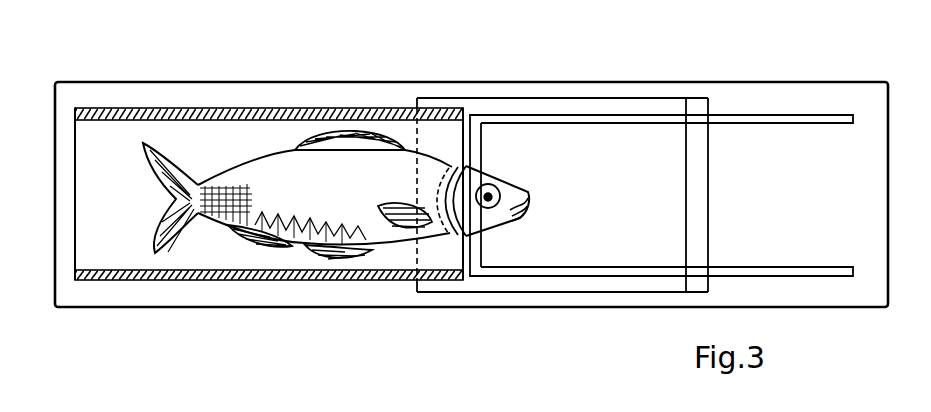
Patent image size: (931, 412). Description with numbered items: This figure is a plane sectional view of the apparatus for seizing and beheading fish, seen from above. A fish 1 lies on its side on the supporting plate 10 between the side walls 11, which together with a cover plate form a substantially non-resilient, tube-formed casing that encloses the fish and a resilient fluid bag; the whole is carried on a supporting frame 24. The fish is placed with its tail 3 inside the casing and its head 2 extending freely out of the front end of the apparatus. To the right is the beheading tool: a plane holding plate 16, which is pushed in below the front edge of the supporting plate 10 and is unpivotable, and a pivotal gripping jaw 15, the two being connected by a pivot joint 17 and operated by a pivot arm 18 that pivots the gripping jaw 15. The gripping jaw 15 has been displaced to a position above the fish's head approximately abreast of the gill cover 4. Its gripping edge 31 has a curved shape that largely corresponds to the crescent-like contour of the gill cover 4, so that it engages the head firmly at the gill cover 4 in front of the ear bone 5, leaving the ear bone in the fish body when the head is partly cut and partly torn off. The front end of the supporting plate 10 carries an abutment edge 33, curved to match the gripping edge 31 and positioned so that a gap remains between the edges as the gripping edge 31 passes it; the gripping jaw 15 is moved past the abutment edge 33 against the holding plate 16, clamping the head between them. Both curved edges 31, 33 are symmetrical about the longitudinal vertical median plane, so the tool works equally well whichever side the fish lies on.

The fish 1 is at (355, 183).
The head 2 is at (529, 183).
The tail 3 is at (198, 163).
The gill cover 4 is at (452, 232).
The ear bone 5 is at (447, 170).
The supporting plate 10 is at (130, 211).
The side walls 11 is at (138, 108).
The gripping jaw 15 is at (612, 123).
The holding plate 16 is at (592, 98).
The pivot joint 17 is at (685, 212).
The pivot arm 18 is at (777, 124).
The supporting frame 24 is at (226, 81).
The gripping edge 31 is at (476, 226).
The abutment edge 33 is at (466, 147).